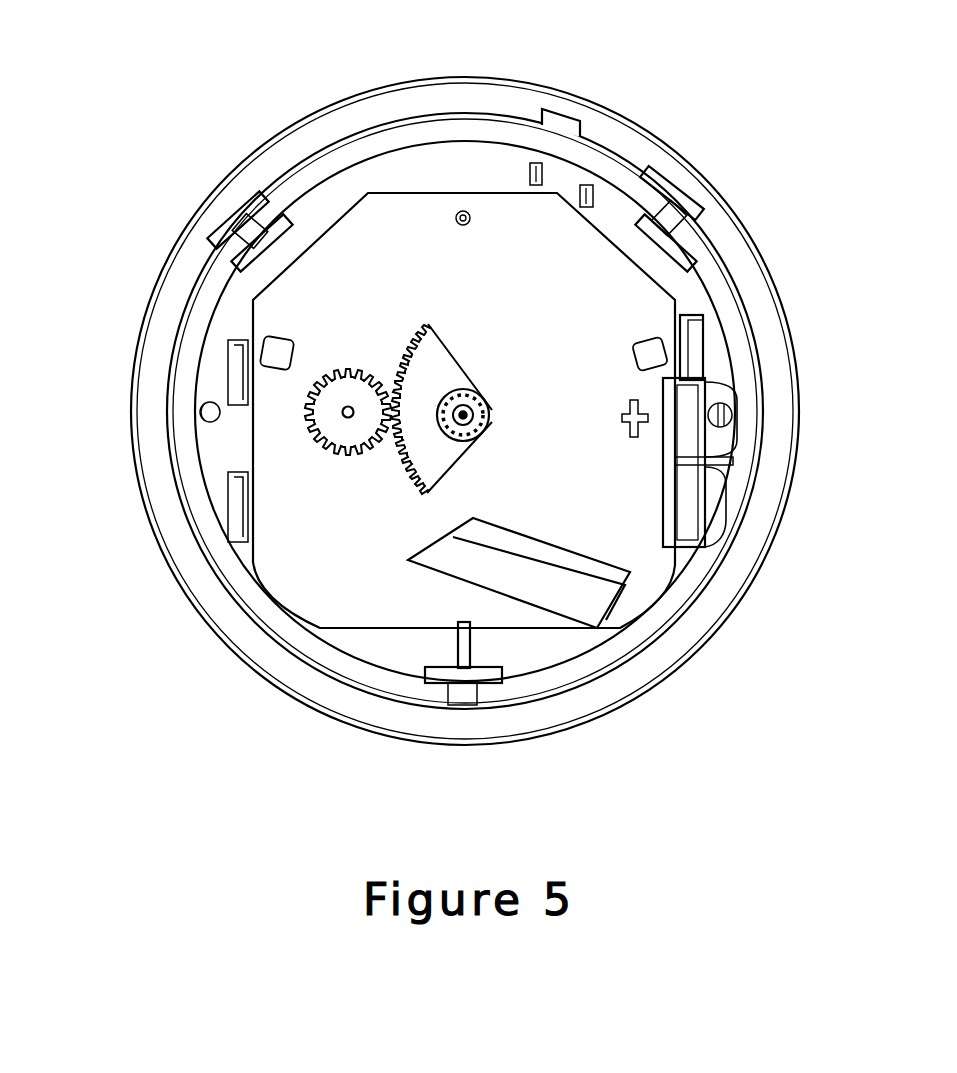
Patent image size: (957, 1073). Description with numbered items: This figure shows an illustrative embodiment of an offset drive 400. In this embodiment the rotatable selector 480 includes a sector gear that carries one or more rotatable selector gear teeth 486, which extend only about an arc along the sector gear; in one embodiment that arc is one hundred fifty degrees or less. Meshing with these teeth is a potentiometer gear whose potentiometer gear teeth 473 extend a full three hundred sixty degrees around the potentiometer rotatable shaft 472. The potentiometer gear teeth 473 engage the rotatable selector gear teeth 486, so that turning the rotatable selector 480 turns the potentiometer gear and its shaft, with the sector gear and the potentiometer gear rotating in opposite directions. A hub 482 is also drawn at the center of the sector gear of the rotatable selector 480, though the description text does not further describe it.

The offset drive 400 is at (652, 86).
The potentiometer rotatable shaft 472 is at (343, 414).
The potentiometer gear teeth 473 is at (361, 370).
The rotatable selector 480 is at (323, 402).
The hub 482 is at (470, 418).
The rotatable selector gear teeth 486 is at (404, 425).